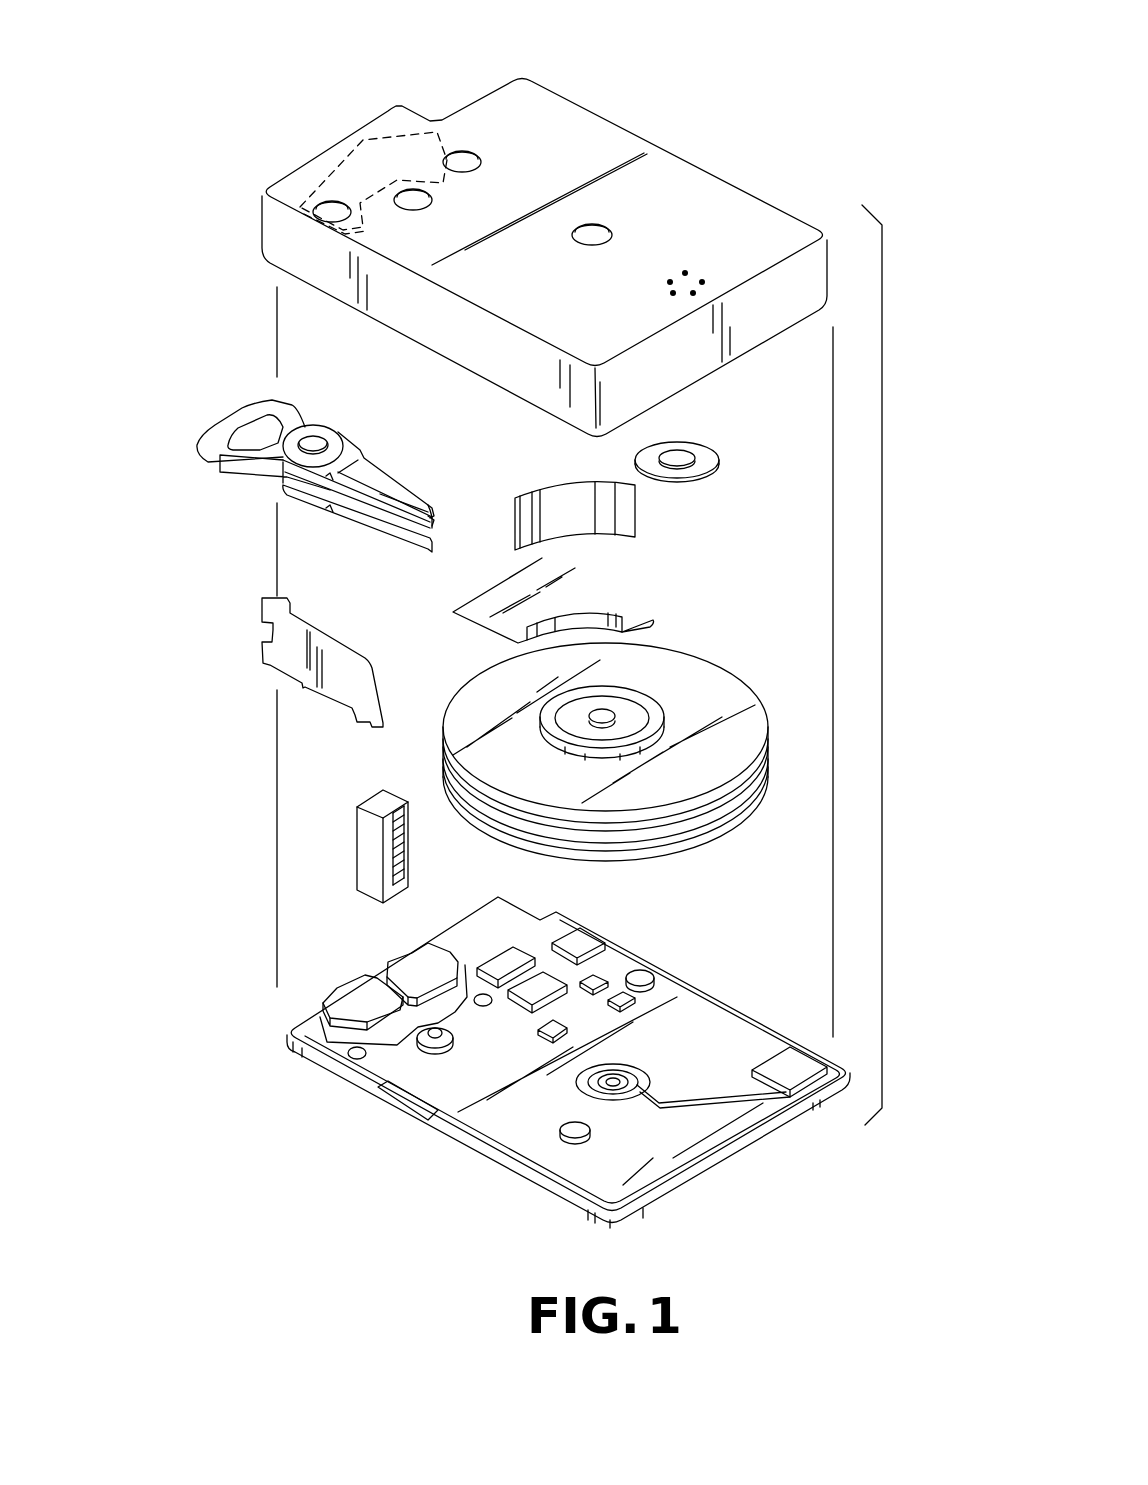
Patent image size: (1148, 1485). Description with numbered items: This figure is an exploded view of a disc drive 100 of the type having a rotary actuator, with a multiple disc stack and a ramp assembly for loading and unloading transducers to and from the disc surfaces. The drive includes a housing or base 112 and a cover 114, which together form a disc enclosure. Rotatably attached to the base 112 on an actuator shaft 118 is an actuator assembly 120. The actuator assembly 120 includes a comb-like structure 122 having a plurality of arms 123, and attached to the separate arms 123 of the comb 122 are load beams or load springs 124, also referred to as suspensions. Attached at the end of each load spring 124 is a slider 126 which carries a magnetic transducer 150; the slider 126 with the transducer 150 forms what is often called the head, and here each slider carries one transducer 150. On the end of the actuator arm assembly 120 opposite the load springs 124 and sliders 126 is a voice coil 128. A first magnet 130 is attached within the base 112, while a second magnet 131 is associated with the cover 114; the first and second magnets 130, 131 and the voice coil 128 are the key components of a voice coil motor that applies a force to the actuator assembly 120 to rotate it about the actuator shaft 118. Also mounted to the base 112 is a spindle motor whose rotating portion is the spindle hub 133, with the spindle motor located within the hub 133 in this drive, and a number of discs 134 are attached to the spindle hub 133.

The disc drive 100 is at (696, 102).
The base 112 is at (735, 1033).
The cover 114 is at (710, 193).
The actuator shaft 118 is at (313, 440).
The actuator assembly 120 is at (250, 477).
The comb-like structure 122 is at (340, 524).
The arms 123 is at (352, 438).
The load springs 124 is at (398, 487).
The slider 126 is at (430, 510).
The voice coil 128 is at (228, 422).
The first magnet 130 is at (337, 988).
The second magnet 131 is at (367, 140).
The spindle hub 133 is at (612, 705).
The discs 134 is at (730, 692).
The magnetic transducer 150 is at (433, 519).